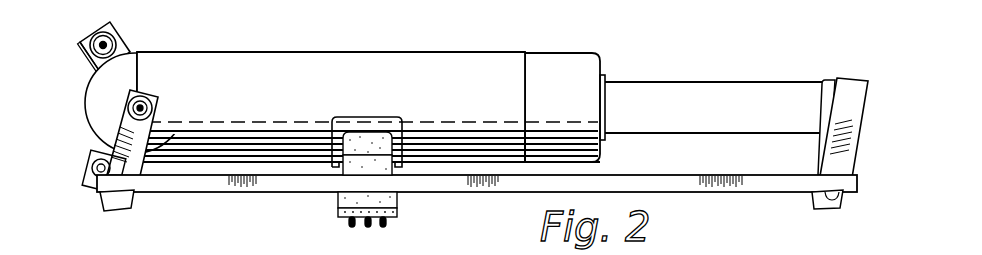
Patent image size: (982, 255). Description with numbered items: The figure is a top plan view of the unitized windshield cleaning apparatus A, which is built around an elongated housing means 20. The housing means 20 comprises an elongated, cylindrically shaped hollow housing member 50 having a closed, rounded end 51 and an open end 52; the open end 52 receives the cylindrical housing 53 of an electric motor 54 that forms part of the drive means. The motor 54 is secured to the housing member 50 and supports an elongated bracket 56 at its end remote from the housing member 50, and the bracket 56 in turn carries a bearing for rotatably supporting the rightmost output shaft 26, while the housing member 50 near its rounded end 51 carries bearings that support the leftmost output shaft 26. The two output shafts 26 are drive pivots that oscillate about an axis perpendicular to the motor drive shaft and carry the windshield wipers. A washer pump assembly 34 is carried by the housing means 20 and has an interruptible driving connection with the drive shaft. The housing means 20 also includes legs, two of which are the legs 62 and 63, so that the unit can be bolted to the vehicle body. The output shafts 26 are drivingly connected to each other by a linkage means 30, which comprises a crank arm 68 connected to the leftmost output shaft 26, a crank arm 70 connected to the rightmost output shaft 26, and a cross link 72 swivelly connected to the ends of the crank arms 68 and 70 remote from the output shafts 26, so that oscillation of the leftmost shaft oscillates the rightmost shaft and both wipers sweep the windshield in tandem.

The housing means 20 is at (476, 52).
The output shaft 26 is at (143, 100).
The linkage means 30 is at (512, 190).
The washer pump assembly 34 is at (333, 202).
The housing member 50 is at (377, 73).
The closed rounded end 51 is at (105, 100).
The open end 52 is at (525, 97).
The cylindrical housing 53 is at (557, 68).
The electric motor 54 is at (590, 70).
The bracket 56 is at (765, 100).
The leg 62 is at (122, 40).
The leg 63 is at (83, 177).
The crank arm 68 is at (148, 128).
The crank arm 70 is at (836, 158).
The cross link 72 is at (680, 184).
The unitized windshield cleaning apparatus A is at (295, 51).